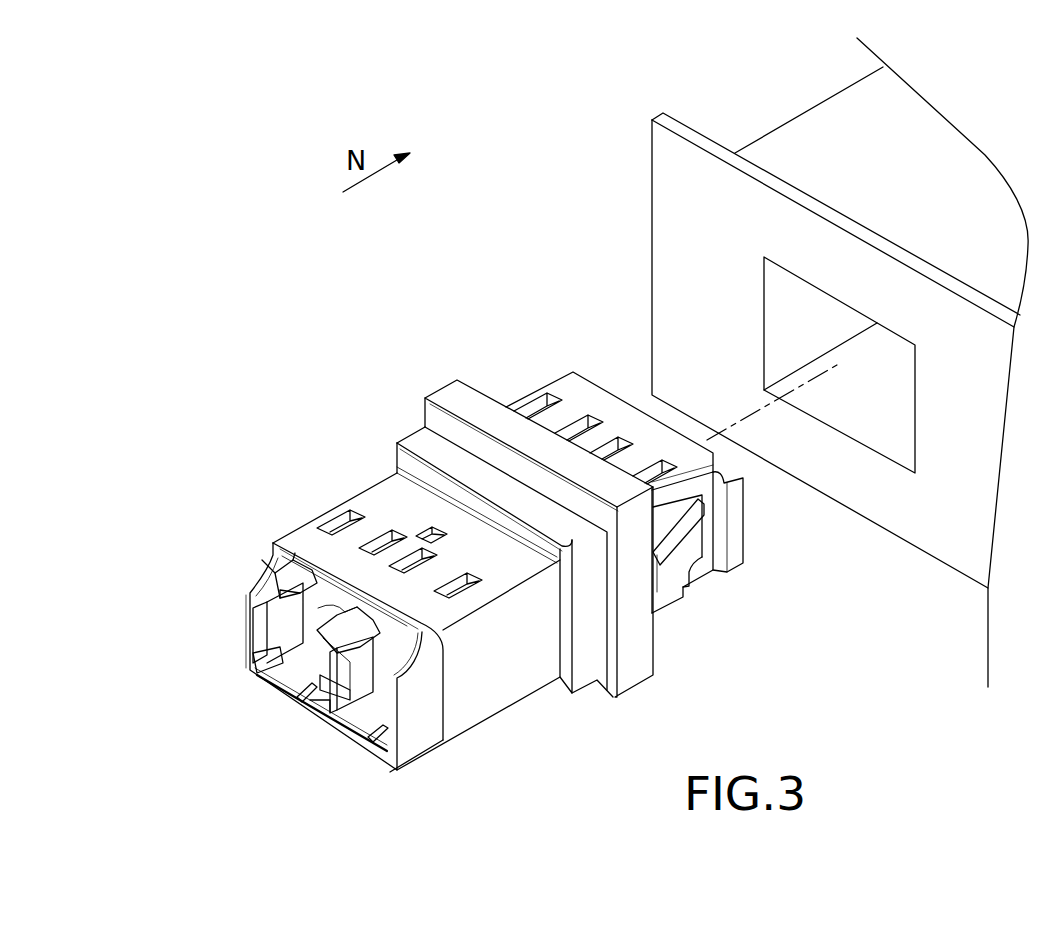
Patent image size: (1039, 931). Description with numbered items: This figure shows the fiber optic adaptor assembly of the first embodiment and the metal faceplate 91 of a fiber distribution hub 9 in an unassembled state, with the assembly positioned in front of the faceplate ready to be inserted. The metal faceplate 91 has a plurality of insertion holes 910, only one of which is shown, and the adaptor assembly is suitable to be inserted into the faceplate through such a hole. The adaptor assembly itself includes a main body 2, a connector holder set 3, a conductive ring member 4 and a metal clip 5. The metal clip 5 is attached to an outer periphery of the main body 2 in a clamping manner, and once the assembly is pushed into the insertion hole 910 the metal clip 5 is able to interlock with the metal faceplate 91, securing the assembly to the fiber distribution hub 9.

The main body 2 is at (360, 581).
The connector holder set 3 is at (225, 560).
The conductive ring member 4 is at (567, 488).
The metal clip 5 is at (695, 566).
The fiber distribution hub 9 is at (791, 362).
The metal faceplate 91 is at (667, 297).
The insertion hole 910 is at (878, 435).